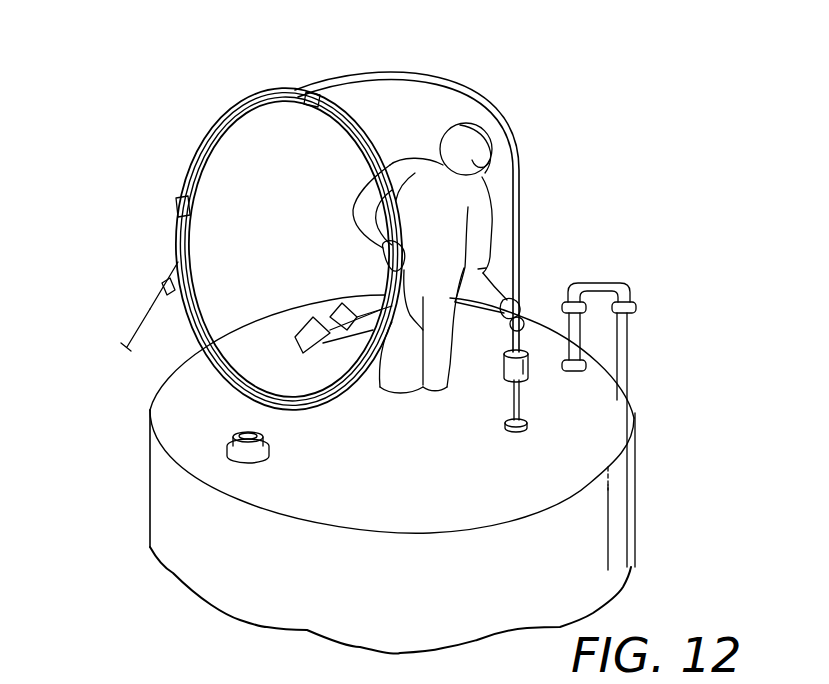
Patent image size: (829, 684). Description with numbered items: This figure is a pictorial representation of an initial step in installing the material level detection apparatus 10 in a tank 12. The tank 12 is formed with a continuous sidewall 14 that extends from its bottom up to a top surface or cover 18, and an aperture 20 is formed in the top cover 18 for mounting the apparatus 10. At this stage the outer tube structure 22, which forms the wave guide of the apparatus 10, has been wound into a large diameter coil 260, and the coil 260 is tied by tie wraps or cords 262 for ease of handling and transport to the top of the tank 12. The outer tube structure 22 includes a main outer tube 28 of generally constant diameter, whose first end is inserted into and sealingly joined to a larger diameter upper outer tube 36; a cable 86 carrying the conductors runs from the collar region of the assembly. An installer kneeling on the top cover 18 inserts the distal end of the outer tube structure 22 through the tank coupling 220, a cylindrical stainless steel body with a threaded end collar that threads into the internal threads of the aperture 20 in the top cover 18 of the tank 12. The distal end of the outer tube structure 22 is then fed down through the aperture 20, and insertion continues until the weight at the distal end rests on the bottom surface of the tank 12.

The material level detection apparatus 10 is at (504, 252).
The tank 12 is at (150, 477).
The continuous sidewall 14 is at (637, 530).
The top surface or cover 18 is at (178, 409).
The aperture 20 is at (527, 422).
The outer tube structure 22 is at (333, 35).
The main outer tube 28 is at (518, 164).
The upper outer tube 36 is at (170, 268).
The cable 86 is at (155, 322).
The tank coupling 220 is at (528, 375).
The coil 260 is at (241, 110).
The tie wraps or cords 262 is at (318, 101).